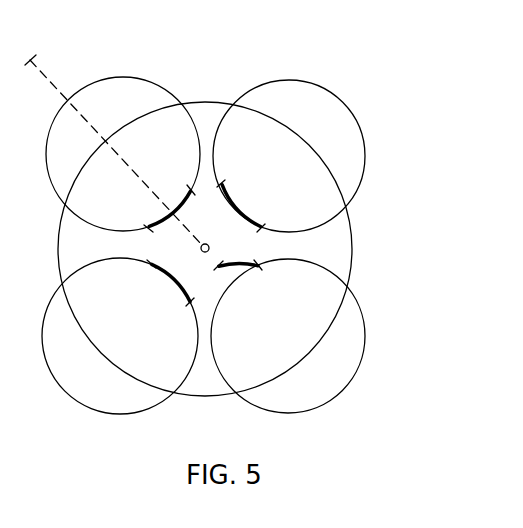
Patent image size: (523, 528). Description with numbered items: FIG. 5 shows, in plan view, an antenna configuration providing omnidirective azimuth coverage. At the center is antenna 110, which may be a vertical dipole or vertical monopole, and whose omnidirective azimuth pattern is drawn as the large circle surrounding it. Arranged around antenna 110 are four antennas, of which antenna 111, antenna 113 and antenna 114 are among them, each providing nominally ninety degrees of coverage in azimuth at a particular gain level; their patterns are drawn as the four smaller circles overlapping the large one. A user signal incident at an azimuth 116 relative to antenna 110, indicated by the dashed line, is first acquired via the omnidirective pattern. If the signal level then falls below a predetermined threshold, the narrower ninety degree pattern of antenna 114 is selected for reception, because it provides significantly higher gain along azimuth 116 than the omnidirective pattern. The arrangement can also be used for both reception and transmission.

The antenna 110 is at (206, 252).
The antenna 111 is at (235, 210).
The antenna 113 is at (176, 283).
The antenna 114 is at (170, 215).
The azimuth 116 is at (34, 58).